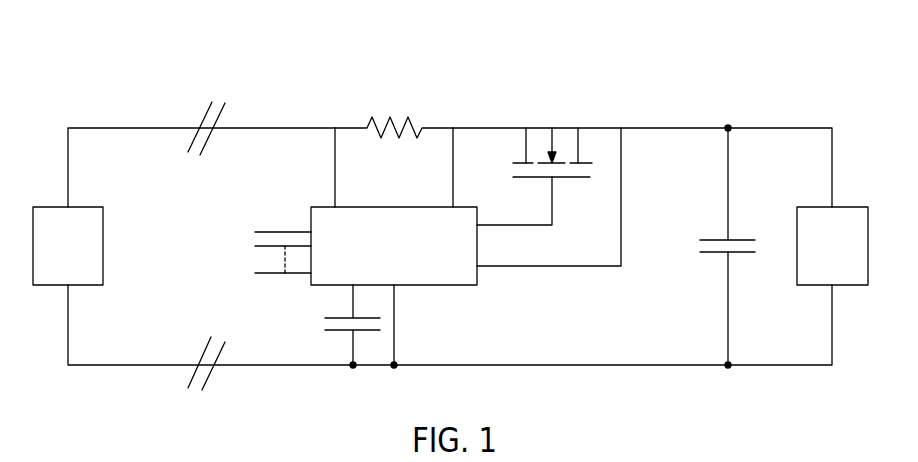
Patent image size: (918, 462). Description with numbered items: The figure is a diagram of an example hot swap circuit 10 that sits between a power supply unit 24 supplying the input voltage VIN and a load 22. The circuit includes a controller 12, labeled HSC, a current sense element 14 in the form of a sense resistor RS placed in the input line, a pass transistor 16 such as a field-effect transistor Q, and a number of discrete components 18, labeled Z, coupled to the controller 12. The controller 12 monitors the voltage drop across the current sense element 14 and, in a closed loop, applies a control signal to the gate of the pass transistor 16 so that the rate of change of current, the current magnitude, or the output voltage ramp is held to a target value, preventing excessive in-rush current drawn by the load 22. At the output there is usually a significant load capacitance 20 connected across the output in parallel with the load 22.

The hot swap circuit 10 is at (114, 45).
The controller 12 is at (395, 206).
The current sense element 14 is at (395, 86).
The pass transistor 16 is at (551, 97).
The discrete components 18 is at (235, 261).
The load capacitance 20 is at (738, 236).
The load 22 is at (845, 206).
The power supply unit 24 is at (80, 206).